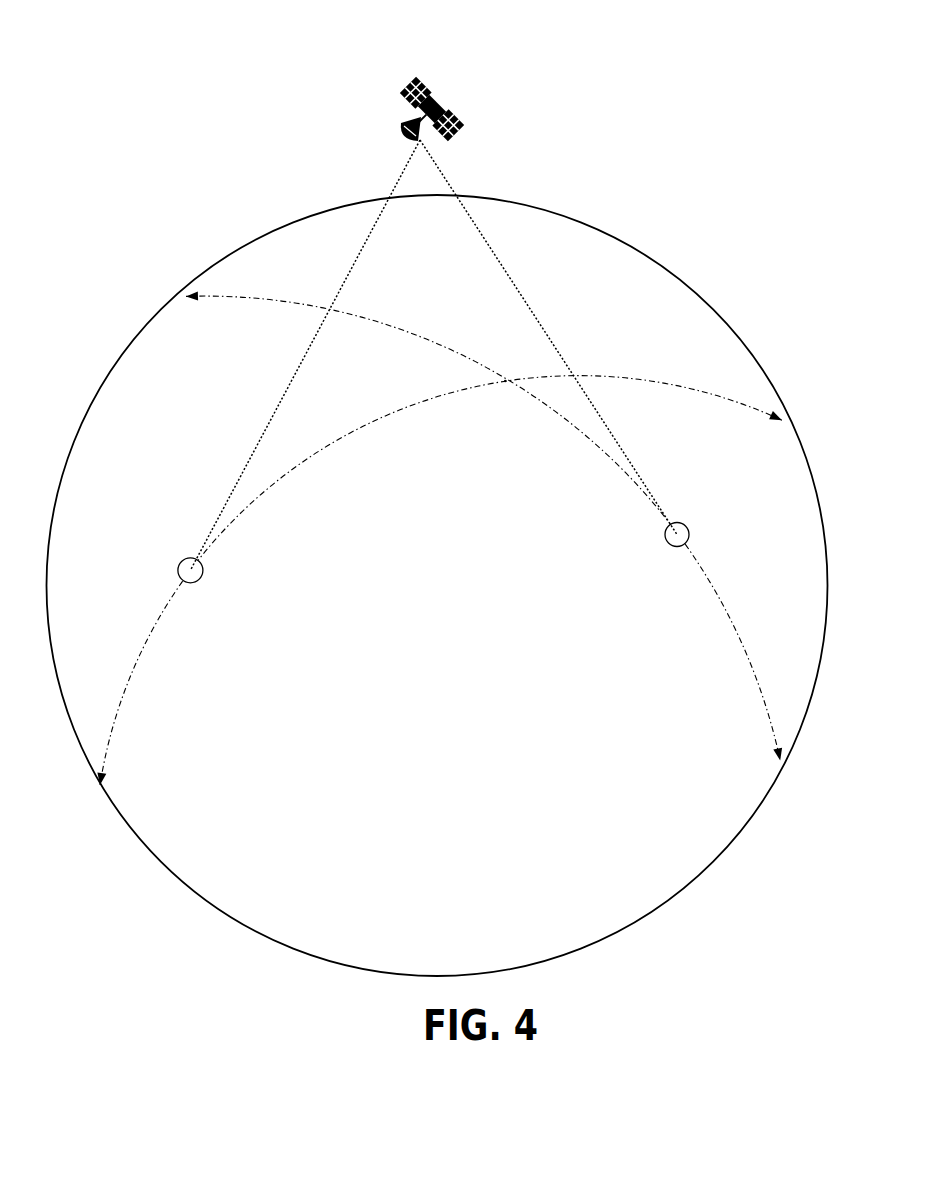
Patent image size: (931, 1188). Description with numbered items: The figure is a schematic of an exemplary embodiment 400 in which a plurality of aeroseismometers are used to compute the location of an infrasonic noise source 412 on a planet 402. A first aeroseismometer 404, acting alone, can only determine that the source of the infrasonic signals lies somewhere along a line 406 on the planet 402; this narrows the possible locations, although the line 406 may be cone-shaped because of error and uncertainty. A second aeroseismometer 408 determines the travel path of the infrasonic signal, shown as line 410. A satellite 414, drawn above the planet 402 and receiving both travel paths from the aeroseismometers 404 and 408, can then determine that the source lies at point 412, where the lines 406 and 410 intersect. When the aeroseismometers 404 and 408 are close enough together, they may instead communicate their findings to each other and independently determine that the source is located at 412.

The exemplary embodiment 400 is at (170, 120).
The planet 402 is at (257, 240).
The aeroseismometer 404 is at (182, 560).
The line 406 is at (407, 410).
The second aeroseismometer 408 is at (689, 526).
The line 410 is at (708, 580).
The infrasonic noise source 412 is at (505, 380).
The satellite 414 is at (443, 97).